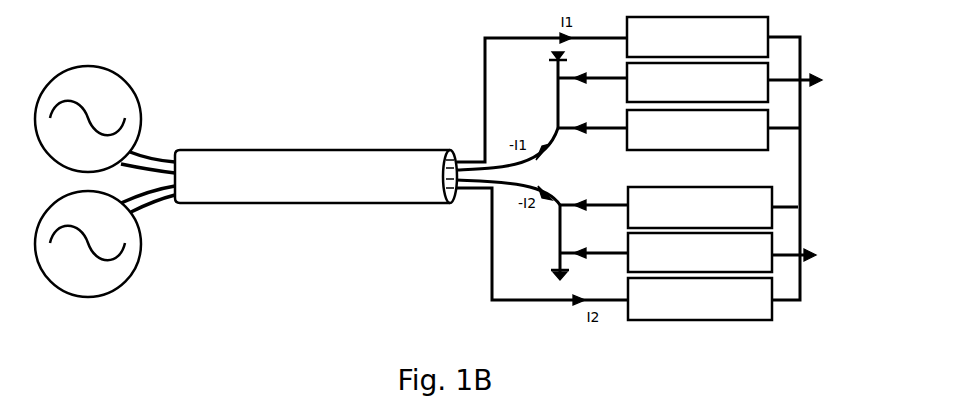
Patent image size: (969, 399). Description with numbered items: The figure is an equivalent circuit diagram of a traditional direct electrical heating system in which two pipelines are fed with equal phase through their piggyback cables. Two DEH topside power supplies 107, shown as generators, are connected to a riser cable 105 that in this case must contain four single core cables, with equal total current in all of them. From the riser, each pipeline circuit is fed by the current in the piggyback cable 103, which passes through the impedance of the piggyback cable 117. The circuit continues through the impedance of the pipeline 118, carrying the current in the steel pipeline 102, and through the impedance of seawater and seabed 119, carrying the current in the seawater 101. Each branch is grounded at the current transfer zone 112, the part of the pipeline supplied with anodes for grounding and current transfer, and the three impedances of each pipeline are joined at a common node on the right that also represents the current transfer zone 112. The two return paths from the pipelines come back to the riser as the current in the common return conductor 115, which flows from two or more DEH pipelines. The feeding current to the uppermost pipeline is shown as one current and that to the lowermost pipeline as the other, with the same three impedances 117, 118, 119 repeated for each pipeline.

The current in seawater 101 is at (593, 174).
The current in steel pipeline 102 is at (593, 174).
The current in piggyback cable 103 is at (542, 170).
The riser cable 105 is at (289, 168).
The DEH topside power supply 107 is at (88, 182).
The current transfer zone 112 is at (680, 168).
The current in common return conductor 115 is at (508, 166).
The impedance of piggyback cable 117 is at (699, 168).
The impedance of pipeline 118 is at (699, 167).
The impedance of seawater and seabed 119 is at (699, 169).